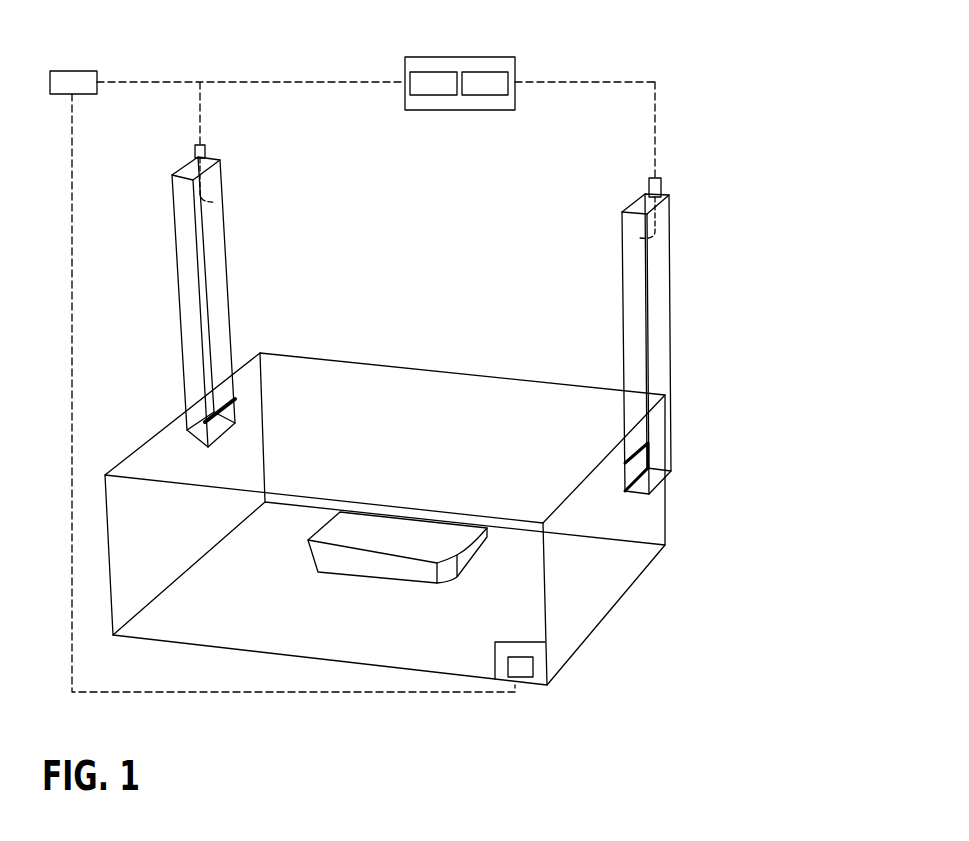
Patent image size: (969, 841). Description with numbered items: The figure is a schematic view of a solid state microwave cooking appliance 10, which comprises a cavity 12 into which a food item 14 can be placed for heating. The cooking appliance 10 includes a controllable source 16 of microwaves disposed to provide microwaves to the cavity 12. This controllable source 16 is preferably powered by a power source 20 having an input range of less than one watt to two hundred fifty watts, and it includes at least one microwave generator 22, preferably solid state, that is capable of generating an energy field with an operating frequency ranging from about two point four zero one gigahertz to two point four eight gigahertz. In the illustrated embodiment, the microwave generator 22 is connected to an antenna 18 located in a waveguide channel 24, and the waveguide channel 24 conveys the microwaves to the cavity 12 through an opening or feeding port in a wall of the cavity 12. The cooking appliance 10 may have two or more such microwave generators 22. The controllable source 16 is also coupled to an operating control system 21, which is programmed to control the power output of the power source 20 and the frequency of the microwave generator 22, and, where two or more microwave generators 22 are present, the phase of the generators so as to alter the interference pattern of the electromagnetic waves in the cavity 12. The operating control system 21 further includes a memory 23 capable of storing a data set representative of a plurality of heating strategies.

The solid state microwave cooking appliance 10 is at (456, 444).
The cavity 12 is at (382, 482).
The food item 14 is at (410, 583).
The controllable source of microwaves 16 is at (498, 78).
The antenna 18 is at (662, 192).
The power source 20 is at (57, 82).
The operating control system 21 is at (585, 676).
The microwave generator 22 is at (490, 92).
The memory 23 is at (523, 668).
The waveguide channel 24 is at (715, 313).